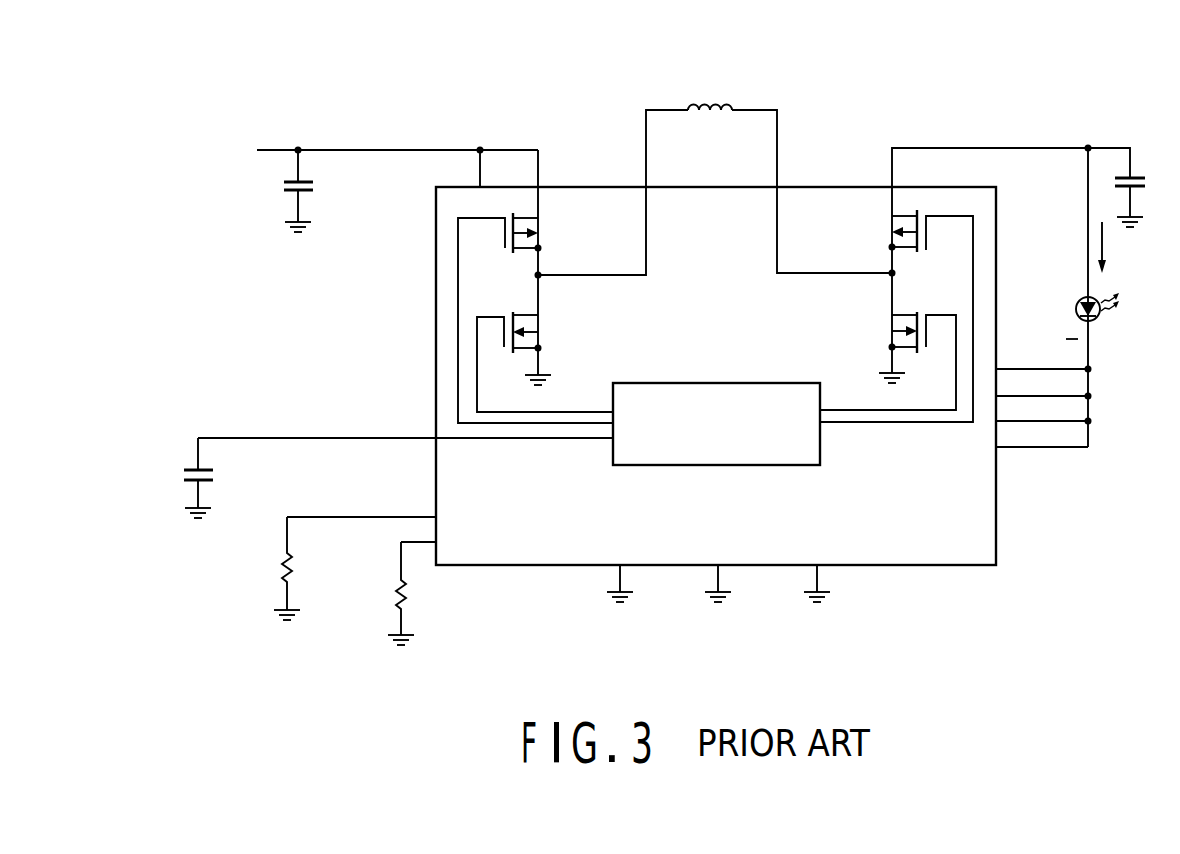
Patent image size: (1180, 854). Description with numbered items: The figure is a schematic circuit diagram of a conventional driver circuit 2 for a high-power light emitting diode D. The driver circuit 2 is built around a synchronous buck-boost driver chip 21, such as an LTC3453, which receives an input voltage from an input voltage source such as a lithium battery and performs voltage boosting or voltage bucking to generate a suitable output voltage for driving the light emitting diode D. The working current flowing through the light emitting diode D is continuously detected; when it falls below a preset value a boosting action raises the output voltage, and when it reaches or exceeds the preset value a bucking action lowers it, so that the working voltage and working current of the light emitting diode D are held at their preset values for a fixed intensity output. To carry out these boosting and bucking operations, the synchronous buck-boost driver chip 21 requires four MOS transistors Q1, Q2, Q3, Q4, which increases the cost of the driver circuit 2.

The driver circuit 2 is at (1020, 103).
The synchronous buck-boost driver chip 21 is at (853, 186).
The MOS transistor Q1 is at (548, 233).
The MOS transistor Q2 is at (549, 332).
The MOS transistor Q3 is at (885, 231).
The MOS transistor Q4 is at (885, 332).
The light emitting diode D is at (1107, 311).